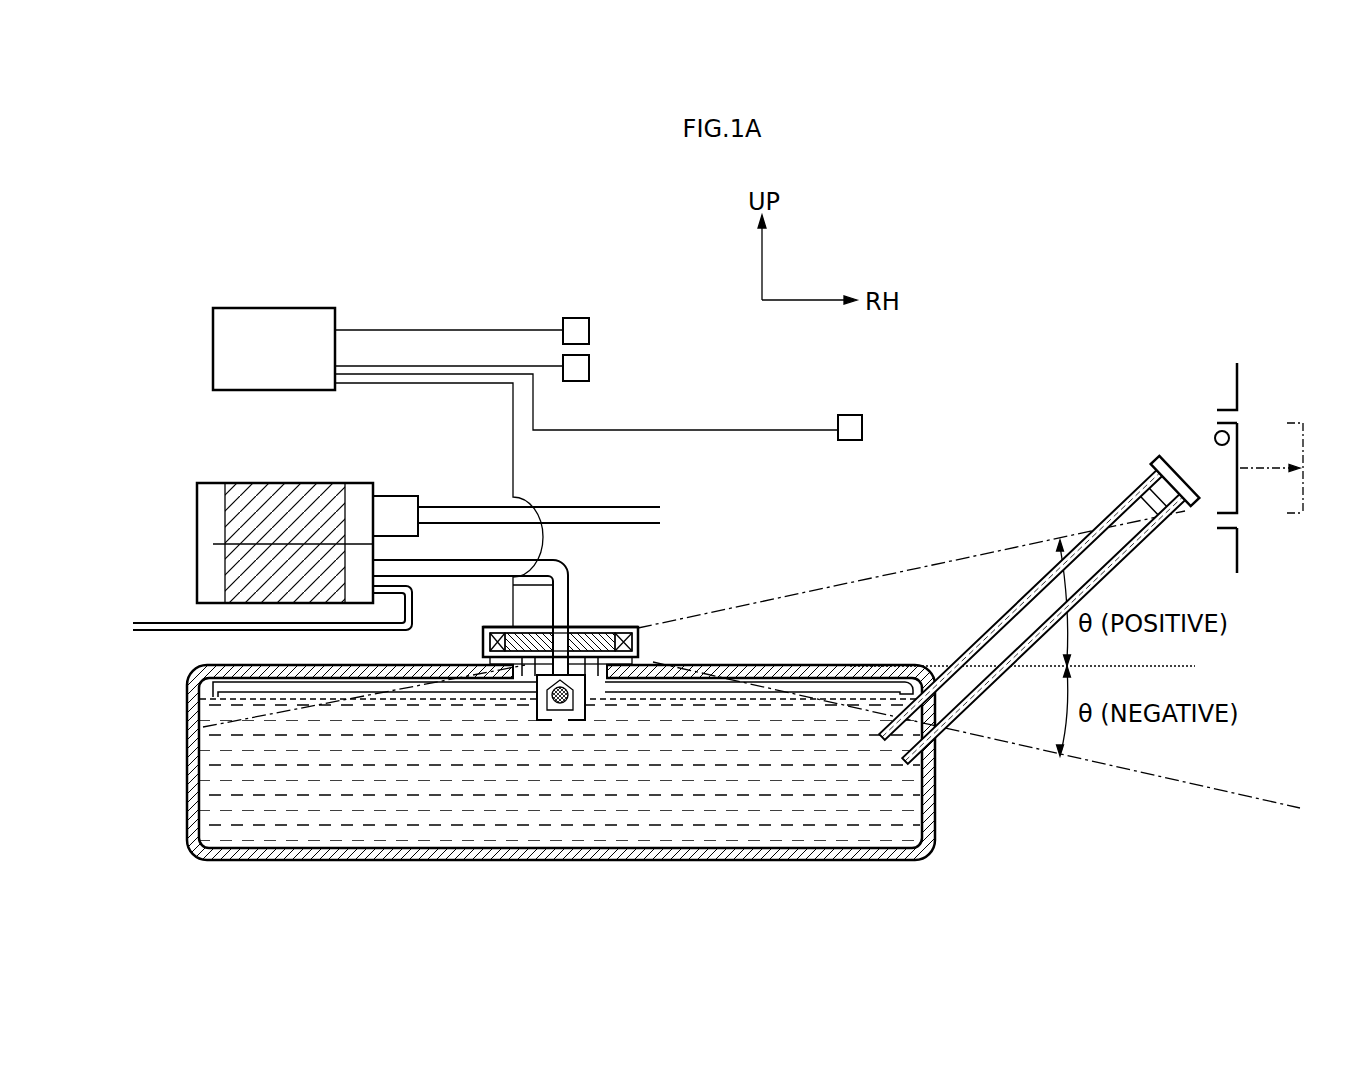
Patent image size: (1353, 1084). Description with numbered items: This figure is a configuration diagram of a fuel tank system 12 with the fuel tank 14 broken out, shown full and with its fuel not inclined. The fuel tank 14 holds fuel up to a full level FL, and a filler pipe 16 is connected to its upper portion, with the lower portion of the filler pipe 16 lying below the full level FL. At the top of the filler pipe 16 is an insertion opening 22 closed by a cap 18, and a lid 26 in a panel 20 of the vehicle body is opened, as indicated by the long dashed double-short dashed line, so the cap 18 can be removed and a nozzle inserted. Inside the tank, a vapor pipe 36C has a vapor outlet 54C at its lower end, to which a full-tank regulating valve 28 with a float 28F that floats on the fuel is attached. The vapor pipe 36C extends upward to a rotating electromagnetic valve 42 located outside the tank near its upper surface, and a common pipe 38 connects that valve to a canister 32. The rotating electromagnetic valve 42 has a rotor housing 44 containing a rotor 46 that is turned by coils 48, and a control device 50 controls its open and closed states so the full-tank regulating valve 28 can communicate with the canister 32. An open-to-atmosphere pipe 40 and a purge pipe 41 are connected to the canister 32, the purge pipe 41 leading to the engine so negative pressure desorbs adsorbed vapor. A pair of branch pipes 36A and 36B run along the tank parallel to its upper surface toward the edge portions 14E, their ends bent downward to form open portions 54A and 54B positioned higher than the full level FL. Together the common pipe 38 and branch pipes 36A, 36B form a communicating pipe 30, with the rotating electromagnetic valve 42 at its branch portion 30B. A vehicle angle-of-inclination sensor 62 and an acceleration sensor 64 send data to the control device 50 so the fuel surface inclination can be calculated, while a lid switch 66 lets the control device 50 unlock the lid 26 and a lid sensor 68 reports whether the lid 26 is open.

The fuel tank system 12 is at (1042, 275).
The fuel tank 14 is at (180, 820).
The edge portion 14E is at (192, 755).
The filler pipe 16 is at (1128, 497).
The cap 18 is at (1163, 460).
The panel 20 is at (1240, 373).
The insertion opening 22 is at (1156, 480).
The lid 26 is at (1240, 507).
The full-tank regulating valve 28 is at (535, 722).
The float 28F is at (588, 705).
The communicating pipe 30 is at (592, 563).
The branch portion 30B is at (586, 600).
The canister 32 is at (207, 483).
The branch pipe 36A is at (340, 673).
The branch pipe 36B is at (845, 670).
The vapor pipe 36C is at (585, 627).
The common pipe 38 is at (418, 560).
The open-to-atmosphere pipe 40 is at (620, 507).
The purge pipe 41 is at (160, 623).
The rotating electromagnetic valve 42 is at (488, 620).
The rotor housing 44 is at (487, 637).
The rotor 46 is at (530, 627).
The coil 48 is at (485, 647).
The control device 50 is at (272, 308).
The open portion 54A is at (205, 688).
The open portion 54B is at (920, 668).
The vapor outlet 54C is at (547, 678).
The vehicle angle-of-inclination sensor 62 is at (590, 331).
The acceleration sensor 64 is at (590, 369).
The lid switch 66 is at (850, 415).
The lid sensor 68 is at (1216, 434).
The full level FL is at (288, 697).